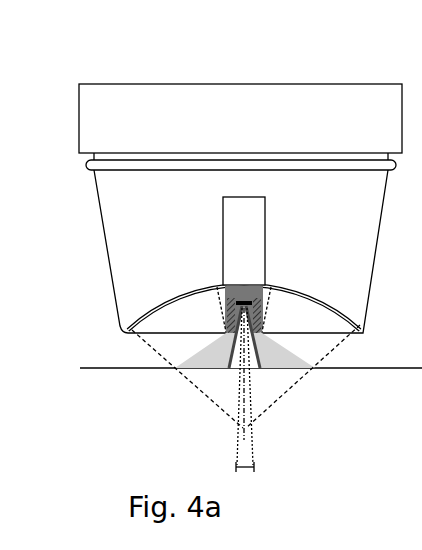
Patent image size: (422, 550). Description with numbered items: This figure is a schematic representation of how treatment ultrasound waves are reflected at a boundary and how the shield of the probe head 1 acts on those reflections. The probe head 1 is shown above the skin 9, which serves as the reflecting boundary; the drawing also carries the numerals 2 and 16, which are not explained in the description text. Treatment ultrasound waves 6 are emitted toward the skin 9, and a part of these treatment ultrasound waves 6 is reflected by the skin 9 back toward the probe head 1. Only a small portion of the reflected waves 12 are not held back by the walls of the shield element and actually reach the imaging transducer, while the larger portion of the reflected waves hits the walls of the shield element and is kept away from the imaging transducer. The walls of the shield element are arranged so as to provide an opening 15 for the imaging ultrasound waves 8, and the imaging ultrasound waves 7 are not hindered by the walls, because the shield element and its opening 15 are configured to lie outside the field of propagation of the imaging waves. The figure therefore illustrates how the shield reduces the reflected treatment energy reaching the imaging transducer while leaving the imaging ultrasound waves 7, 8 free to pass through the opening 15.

The probe head 1 is at (60, 72).
The housing 2 is at (158, 307).
The skin 9 is at (96, 368).
The opening 15 is at (177, 372).
The treatment ultrasound waves 6 is at (200, 395).
The imaging ultrasound waves 7 is at (250, 390).
The imaging ultrasound waves 8 is at (247, 428).
The reflected waves 12 is at (225, 372).
The measuring spot 16 is at (247, 471).